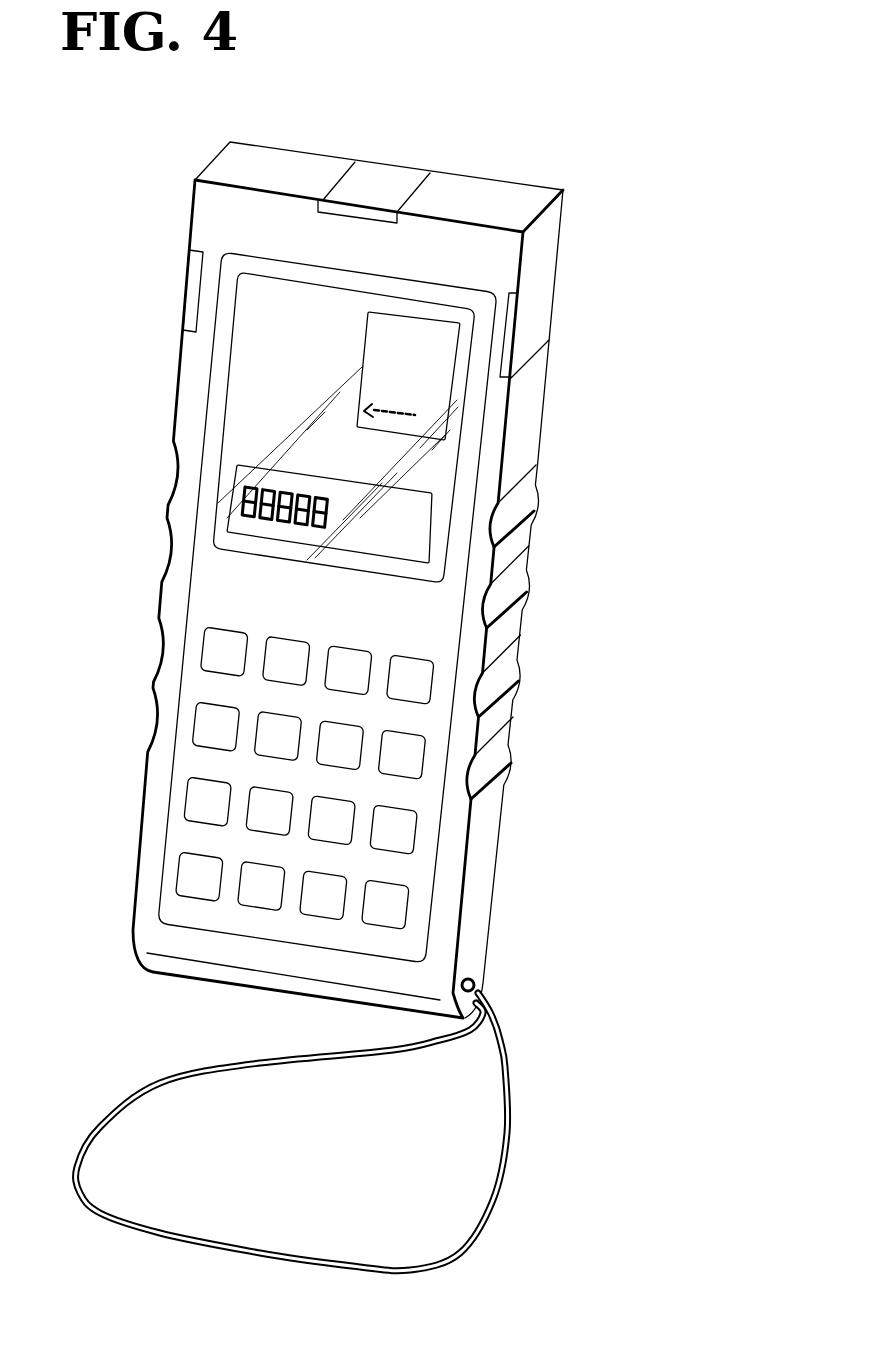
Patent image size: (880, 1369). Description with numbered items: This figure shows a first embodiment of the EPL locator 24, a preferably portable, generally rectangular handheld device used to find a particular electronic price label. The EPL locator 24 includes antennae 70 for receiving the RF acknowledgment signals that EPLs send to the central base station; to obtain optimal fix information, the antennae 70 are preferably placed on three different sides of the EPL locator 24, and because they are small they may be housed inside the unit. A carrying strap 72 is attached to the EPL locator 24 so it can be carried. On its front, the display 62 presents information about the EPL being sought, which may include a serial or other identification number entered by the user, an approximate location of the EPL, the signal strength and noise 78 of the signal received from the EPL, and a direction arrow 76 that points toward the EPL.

The EPL locator 24 is at (412, 655).
The display 62 is at (356, 427).
The antennae 70 is at (388, 175).
The carrying strap 72 is at (313, 1057).
The direction arrow 76 is at (410, 407).
The signal strength and noise 78 is at (245, 512).